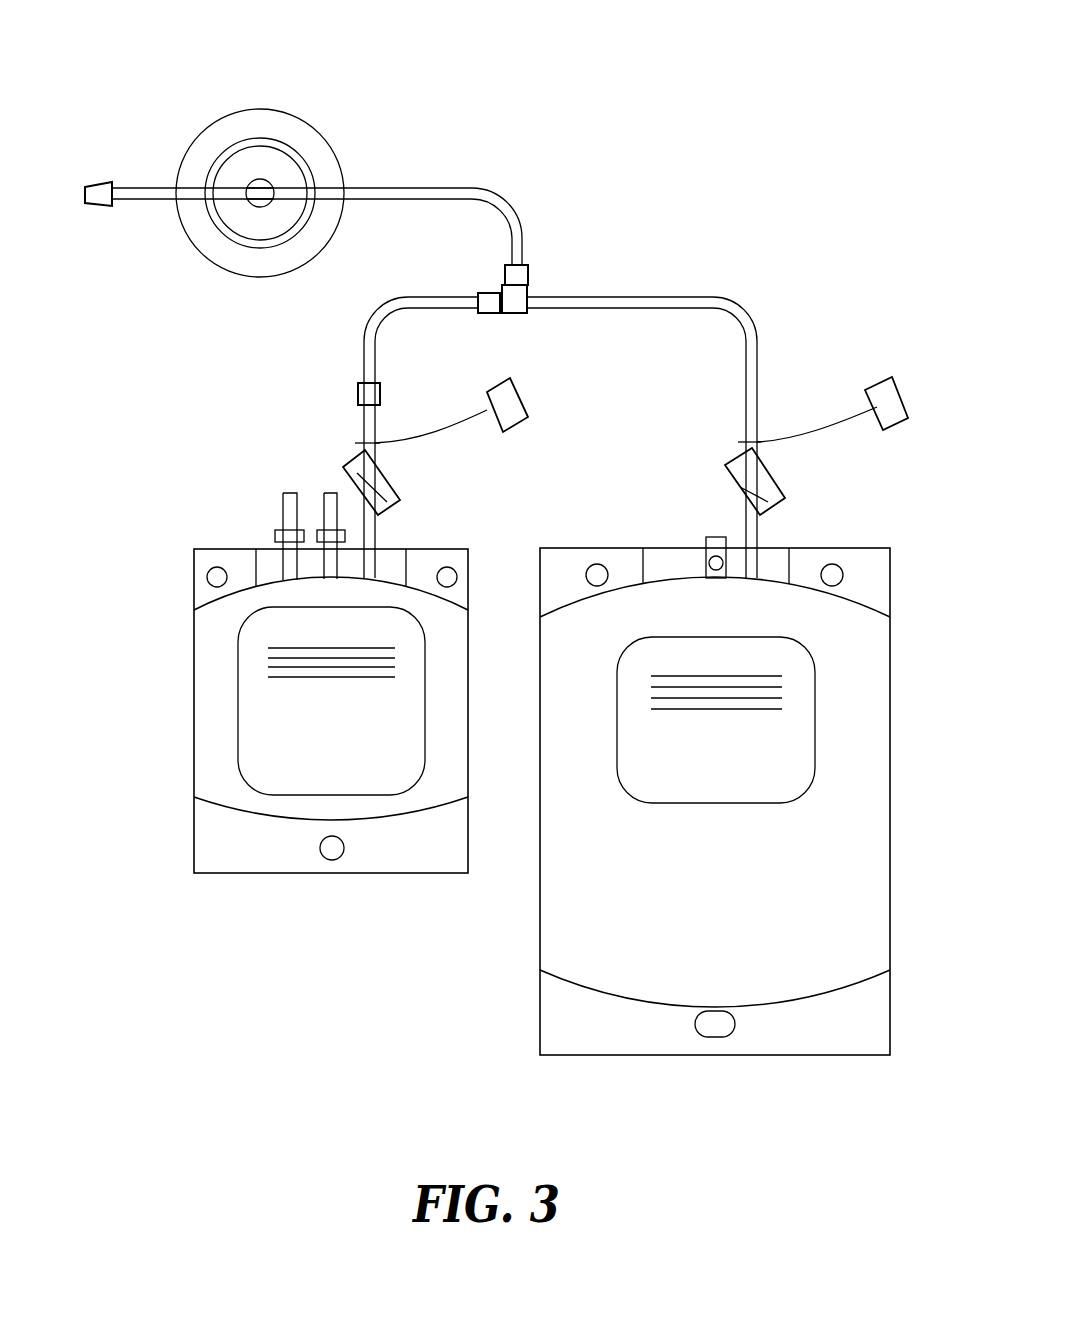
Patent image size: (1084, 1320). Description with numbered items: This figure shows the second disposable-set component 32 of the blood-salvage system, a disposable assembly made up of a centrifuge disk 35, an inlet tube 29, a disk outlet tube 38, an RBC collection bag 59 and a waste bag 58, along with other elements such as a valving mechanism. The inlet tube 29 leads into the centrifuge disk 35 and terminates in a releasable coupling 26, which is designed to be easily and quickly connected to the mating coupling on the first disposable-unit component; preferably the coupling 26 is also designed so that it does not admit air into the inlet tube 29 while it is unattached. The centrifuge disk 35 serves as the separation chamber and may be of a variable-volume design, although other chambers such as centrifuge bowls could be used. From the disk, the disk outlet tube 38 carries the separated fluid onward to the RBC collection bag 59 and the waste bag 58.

The releasable coupling 26 is at (92, 182).
The inlet tube 29 is at (141, 187).
The second disposable-set component 32 is at (741, 147).
The centrifuge disk 35 is at (247, 110).
The disk outlet tube 38 is at (392, 187).
The waste bag 58 is at (788, 1055).
The RBC collection bag 59 is at (412, 873).